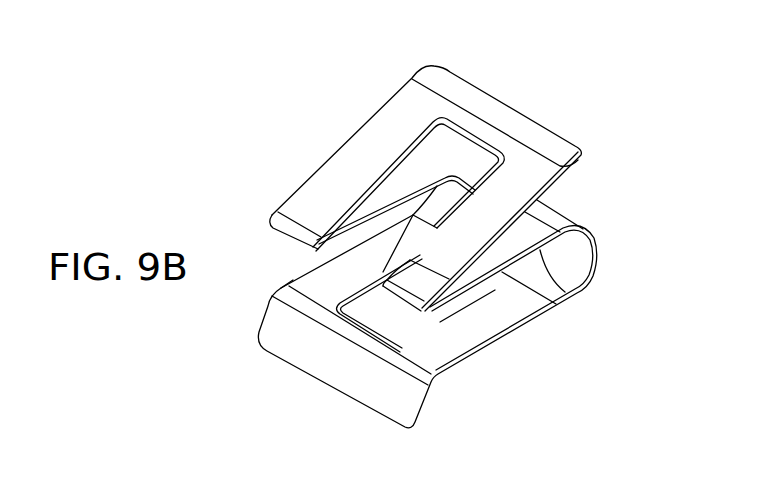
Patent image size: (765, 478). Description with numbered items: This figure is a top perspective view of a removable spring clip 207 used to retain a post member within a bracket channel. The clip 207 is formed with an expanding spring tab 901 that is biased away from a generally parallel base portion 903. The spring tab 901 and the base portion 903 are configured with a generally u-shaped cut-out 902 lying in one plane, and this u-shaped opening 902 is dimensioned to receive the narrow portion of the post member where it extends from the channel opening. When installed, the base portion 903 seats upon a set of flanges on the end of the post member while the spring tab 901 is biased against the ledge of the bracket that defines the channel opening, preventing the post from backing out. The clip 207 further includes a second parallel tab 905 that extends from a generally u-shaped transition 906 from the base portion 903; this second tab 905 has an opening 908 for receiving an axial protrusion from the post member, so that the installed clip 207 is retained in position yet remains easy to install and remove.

The spring clip 207 is at (352, 75).
The expanding spring tab 901 is at (356, 149).
The u-shaped cut-out 902 is at (369, 254).
The base portion 903 is at (543, 250).
The second parallel tab 905 is at (450, 364).
The u-shaped transition 906 is at (597, 246).
The opening 908 is at (386, 323).